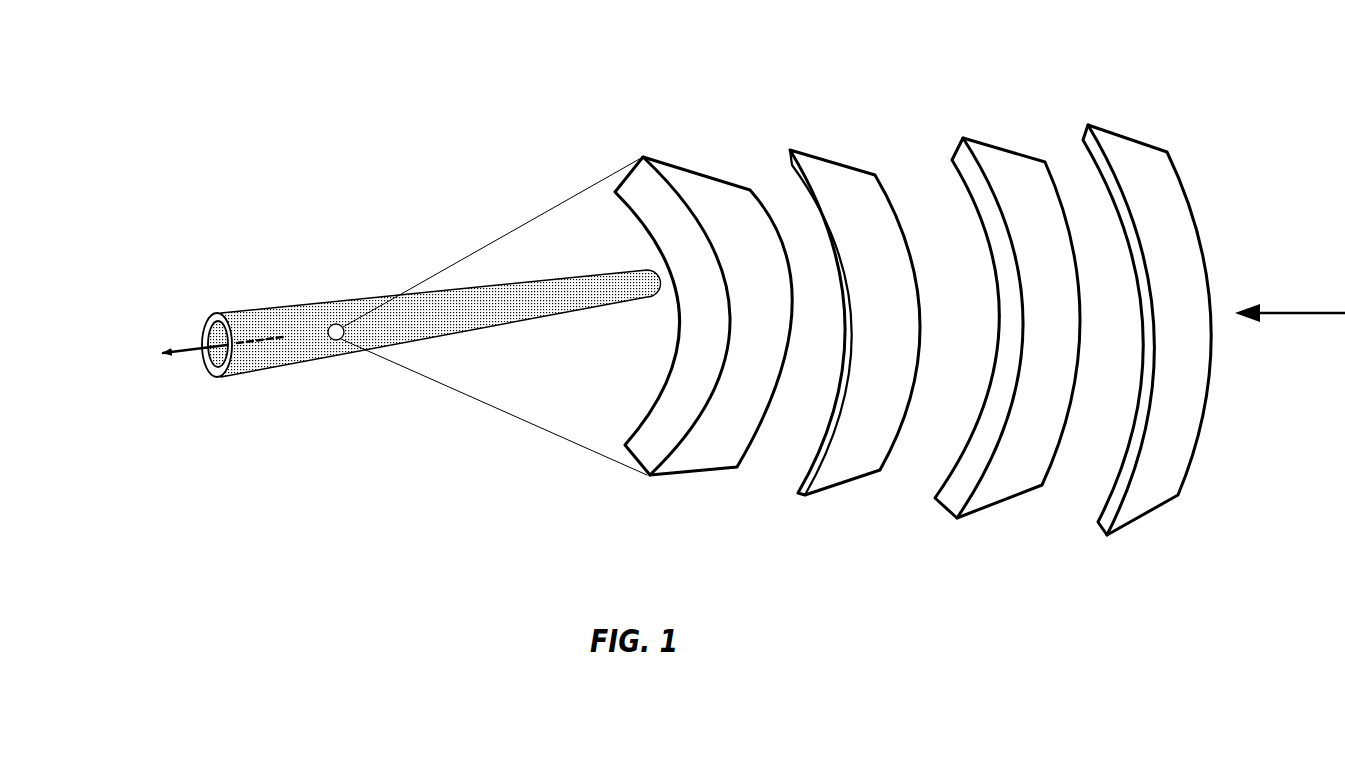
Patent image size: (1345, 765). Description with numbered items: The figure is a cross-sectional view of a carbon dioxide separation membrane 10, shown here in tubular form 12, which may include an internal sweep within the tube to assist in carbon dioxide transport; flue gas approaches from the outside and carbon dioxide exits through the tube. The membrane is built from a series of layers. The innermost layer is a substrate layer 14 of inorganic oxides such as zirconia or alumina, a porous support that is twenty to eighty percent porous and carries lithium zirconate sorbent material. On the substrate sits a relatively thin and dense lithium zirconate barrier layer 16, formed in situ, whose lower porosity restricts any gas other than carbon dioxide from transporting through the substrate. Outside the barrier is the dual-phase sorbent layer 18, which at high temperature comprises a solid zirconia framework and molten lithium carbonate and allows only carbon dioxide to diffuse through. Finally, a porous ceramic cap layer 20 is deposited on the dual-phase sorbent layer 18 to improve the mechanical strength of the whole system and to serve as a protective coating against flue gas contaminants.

The membrane 10 is at (386, 99).
The tubular form 12 is at (361, 281).
The substrate layer 14 is at (703, 299).
The barrier layer 16 is at (855, 293).
The dual-phase sorbent layer 18 is at (1007, 267).
The cap layer 20 is at (1147, 297).